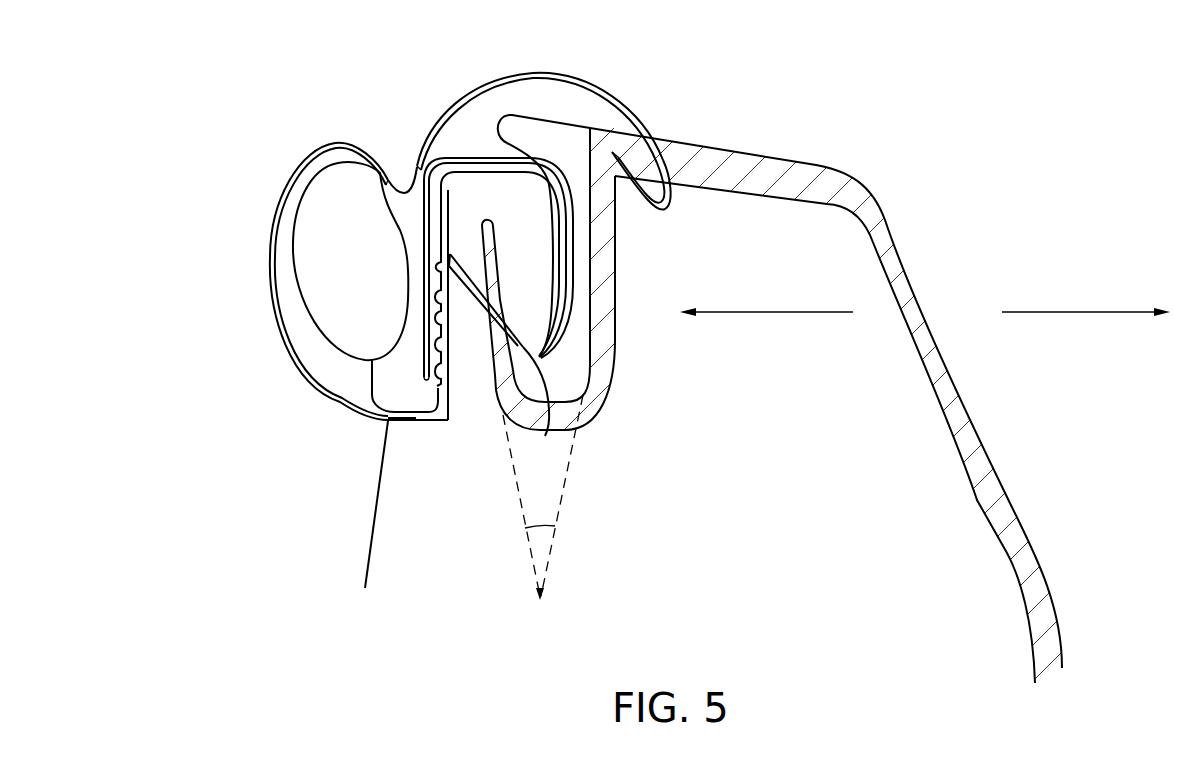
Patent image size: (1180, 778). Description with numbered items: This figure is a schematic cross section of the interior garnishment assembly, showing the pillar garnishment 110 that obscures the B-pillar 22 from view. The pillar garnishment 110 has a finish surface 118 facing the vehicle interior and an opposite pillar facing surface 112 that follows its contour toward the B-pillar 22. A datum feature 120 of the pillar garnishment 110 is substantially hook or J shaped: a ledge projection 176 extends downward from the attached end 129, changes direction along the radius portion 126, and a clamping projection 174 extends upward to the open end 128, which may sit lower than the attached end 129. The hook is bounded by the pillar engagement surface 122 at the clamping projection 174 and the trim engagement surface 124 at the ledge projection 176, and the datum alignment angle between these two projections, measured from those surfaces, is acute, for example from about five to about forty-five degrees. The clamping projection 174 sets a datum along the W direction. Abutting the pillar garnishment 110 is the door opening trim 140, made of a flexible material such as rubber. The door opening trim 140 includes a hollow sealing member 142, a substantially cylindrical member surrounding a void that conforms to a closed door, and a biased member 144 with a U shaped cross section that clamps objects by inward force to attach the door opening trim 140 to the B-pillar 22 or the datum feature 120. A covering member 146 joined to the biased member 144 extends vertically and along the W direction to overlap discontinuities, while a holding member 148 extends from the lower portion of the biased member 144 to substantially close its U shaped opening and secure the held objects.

The door opening trim 140 is at (404, 121).
The hollow sealing member 142 is at (296, 172).
The covering member 146 is at (598, 108).
The attached end 129 is at (620, 185).
The pillar garnishment 110 is at (906, 278).
The finish surface 118 is at (1012, 493).
The pillar facing surface 112 is at (977, 495).
The trim engagement surface 124 is at (583, 280).
The ledge projection 176 is at (605, 323).
The datum feature 120 is at (583, 408).
The radius portion 126 is at (568, 415).
The biased member 144 is at (545, 434).
The pillar engagement surface 122 is at (493, 340).
The clamping projection 174 is at (495, 267).
The holding member 148 is at (460, 277).
The open end 128 is at (480, 228).
The B-pillar 22 is at (378, 514).
The W direction W is at (1093, 318).